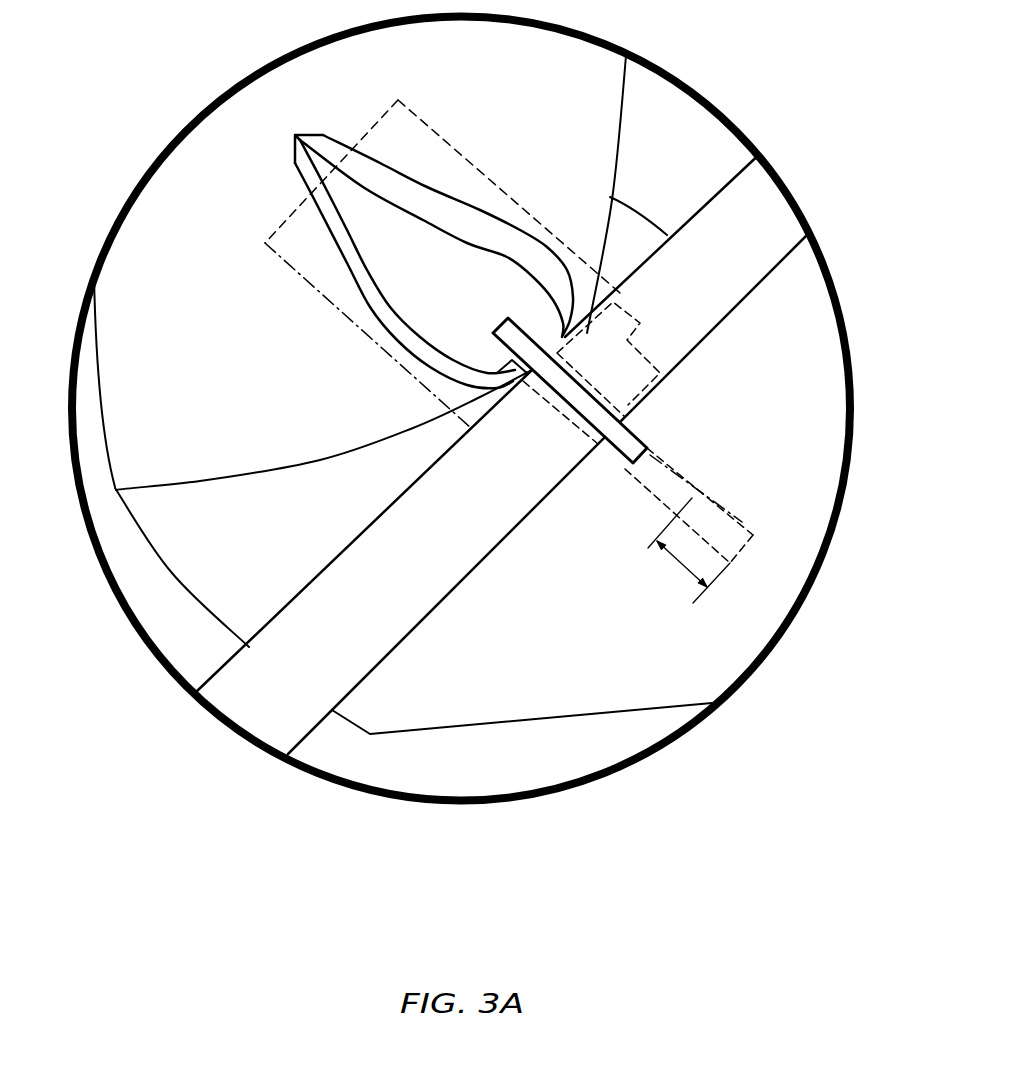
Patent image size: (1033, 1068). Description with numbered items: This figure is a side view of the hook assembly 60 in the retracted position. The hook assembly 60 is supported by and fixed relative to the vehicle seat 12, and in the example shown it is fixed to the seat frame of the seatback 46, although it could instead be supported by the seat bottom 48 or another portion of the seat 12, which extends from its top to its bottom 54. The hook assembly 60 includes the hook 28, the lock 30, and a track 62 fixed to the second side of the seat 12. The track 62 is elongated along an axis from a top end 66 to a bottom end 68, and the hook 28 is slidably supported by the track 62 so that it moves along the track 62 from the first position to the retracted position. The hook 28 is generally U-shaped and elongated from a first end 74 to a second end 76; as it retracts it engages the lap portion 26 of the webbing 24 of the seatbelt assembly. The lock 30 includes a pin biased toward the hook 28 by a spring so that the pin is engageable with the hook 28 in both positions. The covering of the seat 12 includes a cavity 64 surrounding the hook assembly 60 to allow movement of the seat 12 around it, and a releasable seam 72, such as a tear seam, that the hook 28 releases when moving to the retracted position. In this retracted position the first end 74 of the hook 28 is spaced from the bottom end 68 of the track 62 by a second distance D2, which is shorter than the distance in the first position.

The vehicle seat 12 is at (467, 732).
The webbing 24 is at (378, 635).
The lap portion 26 is at (423, 515).
The hook 28 is at (560, 398).
The lock 30 is at (657, 367).
The seatback 46 is at (587, 112).
The seat bottom 48 is at (583, 665).
The bottom 54 is at (215, 483).
The hook assembly 60 is at (623, 503).
The track 62 is at (717, 494).
The cavity 64 is at (307, 283).
The top end 66 is at (537, 340).
The bottom end 68 is at (742, 545).
The releasable seam 72 is at (423, 217).
The first end 74 is at (712, 506).
The second end 76 is at (640, 460).
The second distance D2 is at (689, 550).